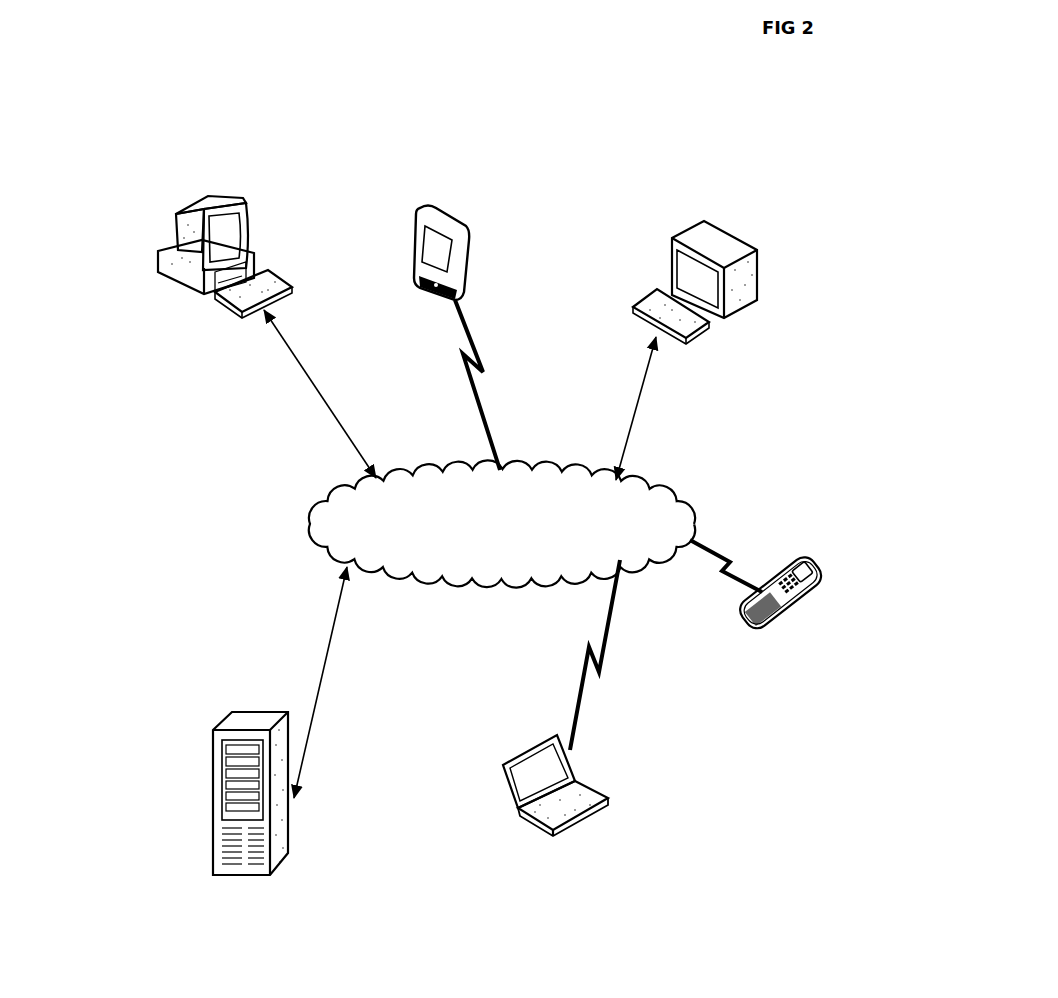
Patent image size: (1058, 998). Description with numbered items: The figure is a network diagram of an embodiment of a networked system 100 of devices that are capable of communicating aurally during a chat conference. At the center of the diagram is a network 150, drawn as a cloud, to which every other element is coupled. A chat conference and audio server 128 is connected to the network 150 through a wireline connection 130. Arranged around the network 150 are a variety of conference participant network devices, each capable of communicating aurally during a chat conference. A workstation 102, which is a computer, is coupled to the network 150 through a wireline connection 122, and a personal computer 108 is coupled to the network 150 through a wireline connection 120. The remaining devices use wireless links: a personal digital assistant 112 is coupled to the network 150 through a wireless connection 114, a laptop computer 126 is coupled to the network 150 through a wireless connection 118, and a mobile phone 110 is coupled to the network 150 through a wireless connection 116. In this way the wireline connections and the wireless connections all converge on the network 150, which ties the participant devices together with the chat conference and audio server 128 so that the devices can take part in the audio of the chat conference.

The networked system 100 is at (738, 156).
The workstation 102 is at (731, 238).
The personal computer 108 is at (242, 204).
The mobile phone 110 is at (793, 563).
The personal digital assistant 112 is at (458, 221).
The wireless connection 114 is at (490, 425).
The wireless connection 116 is at (720, 562).
The wireless connection 118 is at (604, 634).
The wireline connection 120 is at (325, 397).
The wireline connection 122 is at (635, 418).
The laptop computer 126 is at (592, 785).
The chat conference and audio server 128 is at (291, 818).
The wireline connection 130 is at (328, 648).
The network 150 is at (692, 506).